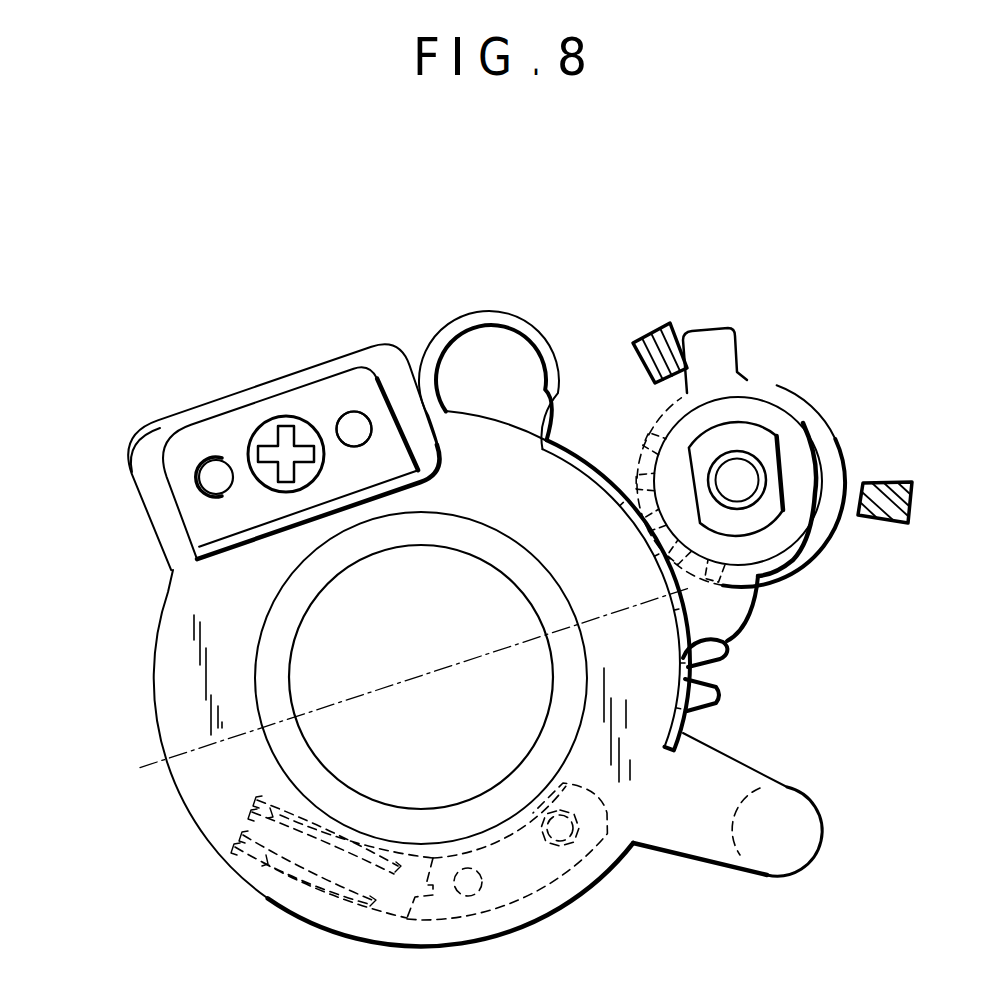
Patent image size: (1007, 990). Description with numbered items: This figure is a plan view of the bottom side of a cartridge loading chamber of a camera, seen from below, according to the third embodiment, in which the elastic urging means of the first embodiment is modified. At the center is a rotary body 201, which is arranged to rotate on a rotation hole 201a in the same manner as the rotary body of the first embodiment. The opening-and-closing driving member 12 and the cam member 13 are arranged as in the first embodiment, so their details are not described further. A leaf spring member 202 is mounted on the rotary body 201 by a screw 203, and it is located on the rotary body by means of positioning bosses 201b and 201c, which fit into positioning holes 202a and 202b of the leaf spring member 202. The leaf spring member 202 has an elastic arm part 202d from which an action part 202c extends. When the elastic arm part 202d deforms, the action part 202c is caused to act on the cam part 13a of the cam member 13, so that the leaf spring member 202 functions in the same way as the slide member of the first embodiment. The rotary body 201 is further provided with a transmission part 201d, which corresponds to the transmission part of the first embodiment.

The rotary body 201 is at (192, 773).
The rotation hole 201a is at (296, 633).
The positioning boss 201b is at (347, 413).
The positioning boss 201c is at (212, 473).
The transmission part 201d is at (706, 852).
The leaf spring member 202 is at (170, 472).
The positioning hole 202a is at (368, 420).
The positioning hole 202b is at (166, 418).
The action part 202c is at (714, 654).
The elastic arm part 202d is at (495, 311).
The screw 203 is at (277, 413).
The opening-and-closing driving member 12 is at (735, 345).
The cam member 13 is at (795, 440).
The cam part 13a is at (748, 627).